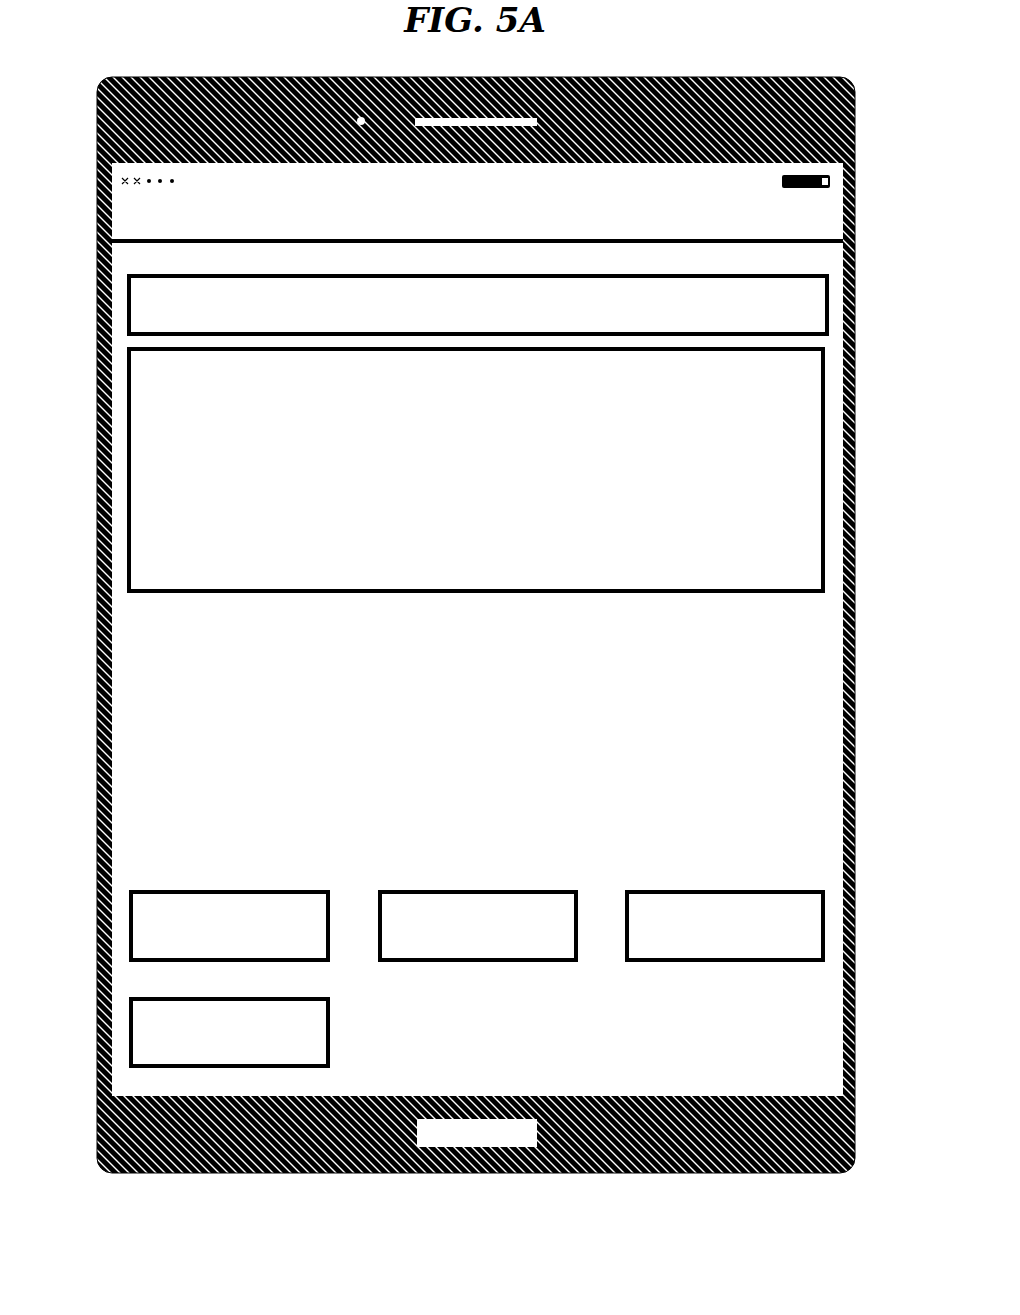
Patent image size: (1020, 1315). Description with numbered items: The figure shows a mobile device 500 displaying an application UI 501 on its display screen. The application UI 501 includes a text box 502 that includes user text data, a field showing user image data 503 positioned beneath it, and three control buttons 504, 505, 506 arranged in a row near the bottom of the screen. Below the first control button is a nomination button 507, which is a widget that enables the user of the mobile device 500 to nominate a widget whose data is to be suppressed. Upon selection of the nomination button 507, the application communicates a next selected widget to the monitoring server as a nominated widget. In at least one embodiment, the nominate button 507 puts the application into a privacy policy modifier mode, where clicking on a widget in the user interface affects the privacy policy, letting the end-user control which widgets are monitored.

The mobile device 500 is at (137, 77).
The application UI 501 is at (140, 222).
The text box 502 is at (127, 305).
The field showing user image data 503 is at (127, 432).
The control button 504 is at (154, 890).
The control button 505 is at (445, 890).
The control button 506 is at (783, 890).
The nomination button 507 is at (153, 997).